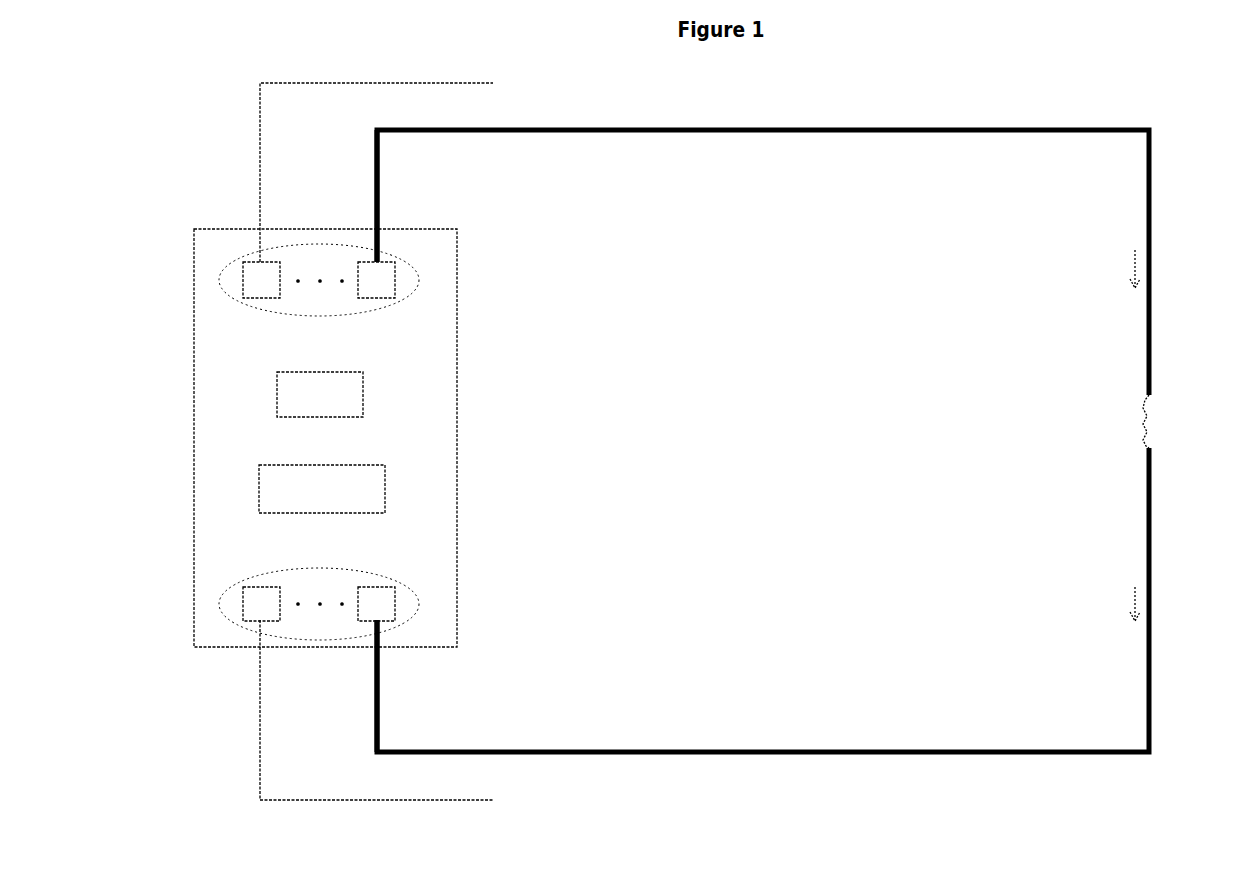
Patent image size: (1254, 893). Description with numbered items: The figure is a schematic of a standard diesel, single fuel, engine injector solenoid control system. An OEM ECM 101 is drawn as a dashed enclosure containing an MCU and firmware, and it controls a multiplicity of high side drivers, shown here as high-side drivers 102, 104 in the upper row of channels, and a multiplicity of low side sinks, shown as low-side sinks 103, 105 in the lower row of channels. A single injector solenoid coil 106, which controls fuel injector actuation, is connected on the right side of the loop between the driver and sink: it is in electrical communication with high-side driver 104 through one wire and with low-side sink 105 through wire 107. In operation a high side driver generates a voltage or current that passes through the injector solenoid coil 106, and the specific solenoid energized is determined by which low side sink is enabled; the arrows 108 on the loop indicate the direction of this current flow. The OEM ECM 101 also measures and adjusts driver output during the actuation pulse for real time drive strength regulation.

The OEM ECM 101 is at (180, 424).
The high-side driver 102 is at (243, 277).
The low-side sink 103 is at (243, 604).
The high-side driver 104 is at (363, 262).
The low-side sink 105 is at (363, 620).
The injector solenoid coil 106 is at (1160, 422).
The wire 107 is at (1160, 292).
The current flow direction (returning) 108 is at (1160, 540).